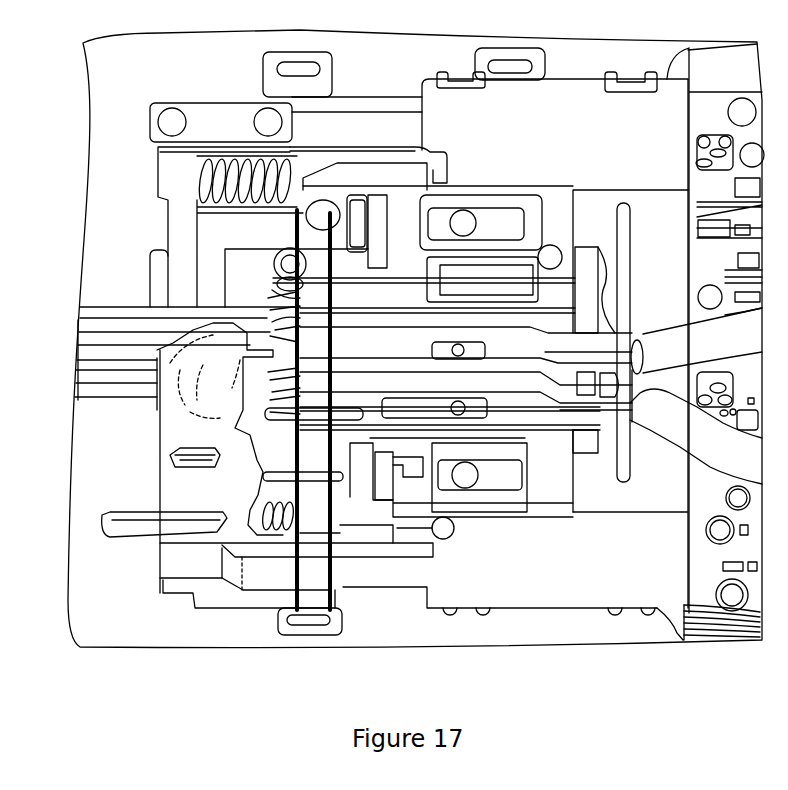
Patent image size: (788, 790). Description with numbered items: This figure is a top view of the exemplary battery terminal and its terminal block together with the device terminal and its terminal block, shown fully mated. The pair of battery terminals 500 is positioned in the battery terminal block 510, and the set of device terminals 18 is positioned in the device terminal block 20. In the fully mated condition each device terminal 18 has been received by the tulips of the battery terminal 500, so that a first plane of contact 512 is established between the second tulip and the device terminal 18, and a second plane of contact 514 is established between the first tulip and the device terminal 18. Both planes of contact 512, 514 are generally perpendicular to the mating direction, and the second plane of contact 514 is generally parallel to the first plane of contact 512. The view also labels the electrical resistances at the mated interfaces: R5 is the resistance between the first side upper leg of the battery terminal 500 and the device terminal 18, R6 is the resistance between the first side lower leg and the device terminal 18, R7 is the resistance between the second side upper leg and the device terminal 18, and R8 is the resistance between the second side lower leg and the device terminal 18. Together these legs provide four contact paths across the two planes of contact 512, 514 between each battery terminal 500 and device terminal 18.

The resistance R5 is at (270, 327).
The resistance R6 is at (273, 404).
The resistance R7 is at (332, 423).
The resistance R8 is at (287, 428).
The device terminal 18 is at (270, 344).
The device terminal block 20 is at (170, 404).
The battery terminal 500 is at (443, 403).
The battery terminal block 510 is at (597, 475).
The first plane of contact 512 is at (287, 570).
The second plane of contact 514 is at (335, 572).